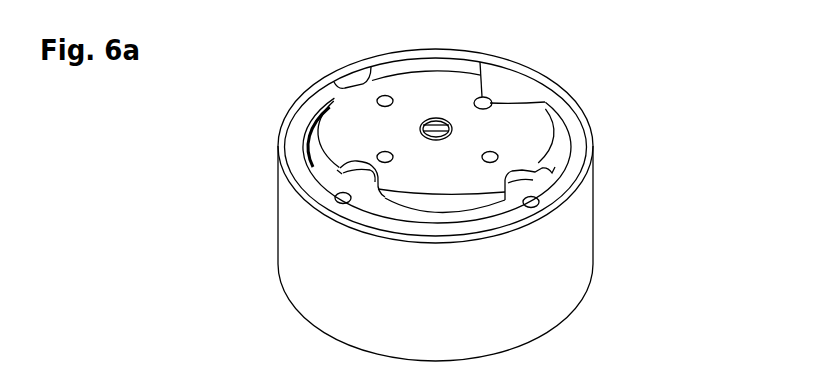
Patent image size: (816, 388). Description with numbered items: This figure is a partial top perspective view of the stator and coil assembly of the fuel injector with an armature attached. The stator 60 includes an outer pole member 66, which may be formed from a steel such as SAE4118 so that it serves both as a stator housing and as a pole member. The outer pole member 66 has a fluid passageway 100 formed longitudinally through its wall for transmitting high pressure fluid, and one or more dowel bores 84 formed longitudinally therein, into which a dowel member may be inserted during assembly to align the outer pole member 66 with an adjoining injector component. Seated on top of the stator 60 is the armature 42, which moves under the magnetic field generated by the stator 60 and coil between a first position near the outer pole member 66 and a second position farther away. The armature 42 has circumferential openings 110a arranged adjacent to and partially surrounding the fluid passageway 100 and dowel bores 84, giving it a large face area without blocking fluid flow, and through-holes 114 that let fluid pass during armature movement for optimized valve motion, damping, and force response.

The armature 42 is at (559, 146).
The stator 60 is at (364, 185).
The outer pole member 66 is at (494, 226).
The dowel bore 84 is at (334, 86).
The fluid passageway 100 is at (337, 199).
The circumferential opening 110a is at (367, 79).
The through-hole 114 is at (479, 99).